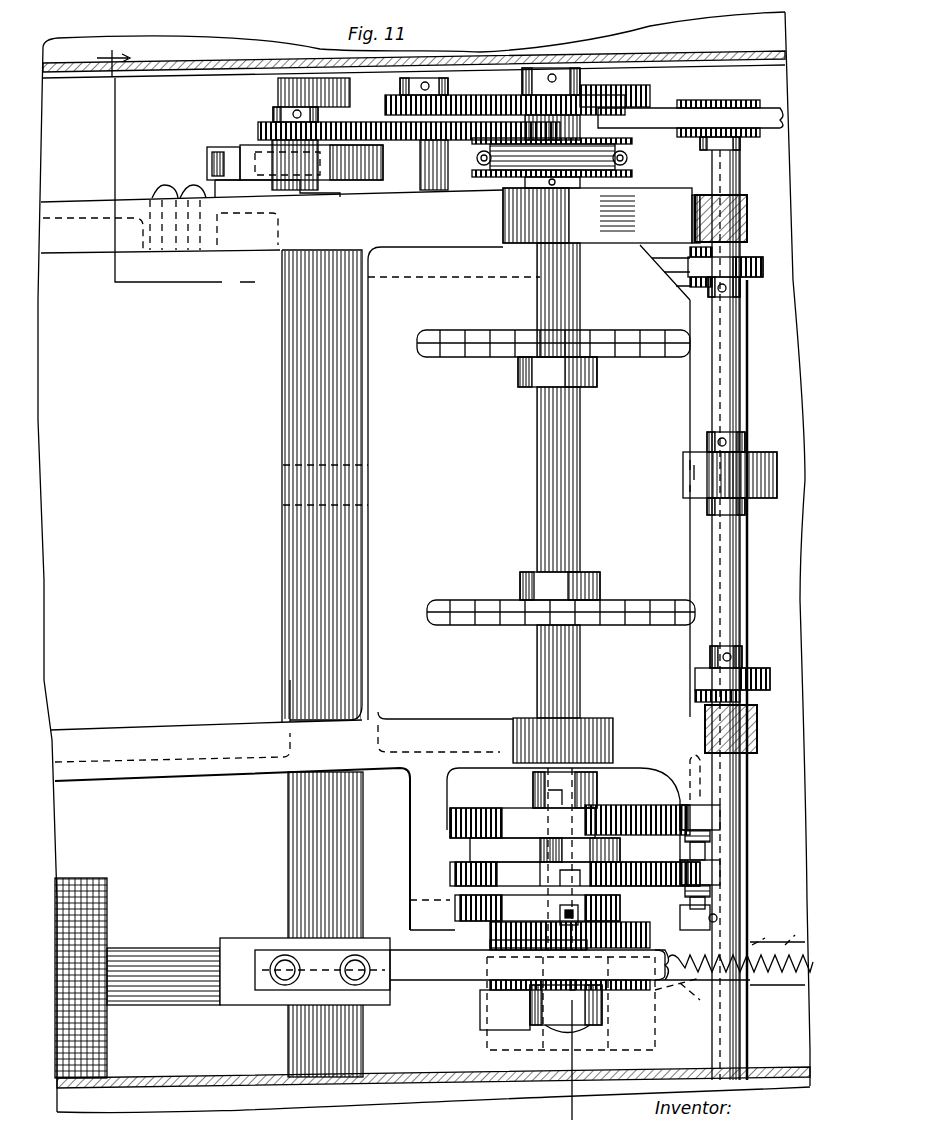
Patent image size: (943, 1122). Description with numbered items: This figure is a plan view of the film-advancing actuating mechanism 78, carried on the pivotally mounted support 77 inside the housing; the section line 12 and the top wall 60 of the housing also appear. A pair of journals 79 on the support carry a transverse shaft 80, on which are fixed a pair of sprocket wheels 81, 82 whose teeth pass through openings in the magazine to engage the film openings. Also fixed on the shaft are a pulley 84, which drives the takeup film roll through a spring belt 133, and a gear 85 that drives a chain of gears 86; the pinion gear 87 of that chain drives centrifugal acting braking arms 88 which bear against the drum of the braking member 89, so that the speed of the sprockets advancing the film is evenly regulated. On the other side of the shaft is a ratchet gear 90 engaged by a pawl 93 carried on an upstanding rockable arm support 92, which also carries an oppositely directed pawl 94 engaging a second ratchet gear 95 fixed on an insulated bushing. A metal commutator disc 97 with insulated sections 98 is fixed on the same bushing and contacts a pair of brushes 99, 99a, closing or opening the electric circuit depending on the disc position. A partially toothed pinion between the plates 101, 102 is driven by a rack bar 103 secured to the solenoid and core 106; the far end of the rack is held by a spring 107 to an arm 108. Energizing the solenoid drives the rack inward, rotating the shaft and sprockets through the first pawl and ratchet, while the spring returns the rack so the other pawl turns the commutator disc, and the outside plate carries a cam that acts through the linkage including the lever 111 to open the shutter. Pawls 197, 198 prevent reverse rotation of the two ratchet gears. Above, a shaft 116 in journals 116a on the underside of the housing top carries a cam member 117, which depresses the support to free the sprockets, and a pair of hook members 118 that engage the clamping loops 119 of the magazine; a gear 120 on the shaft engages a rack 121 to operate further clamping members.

The section line 12- 12 is at (339, 578).
The top plate 60 is at (246, 63).
The support 77 is at (93, 253).
The actuating mechanism 78 is at (646, 770).
The journals 79 is at (523, 240).
The transverse shaft 80 is at (582, 495).
The sprocket wheel 81 is at (468, 357).
The sprocket wheel 82 is at (466, 602).
The pulley 84 is at (618, 182).
The gear 85 is at (645, 88).
The chain of gears 86 is at (494, 84).
The pinion gear 87 is at (262, 125).
The braking arms 88 is at (262, 198).
The braking member 89 is at (222, 148).
The ratchet gear 90 is at (472, 818).
The rockable arm support 92 is at (545, 848).
The pawl 93 is at (527, 818).
The pawl 94 is at (580, 878).
The ratchet gear 95 is at (455, 876).
The commutator disc 97 is at (537, 908).
The insulated sections 98 is at (565, 920).
The brush 99 is at (458, 920).
The brush 99a is at (686, 922).
The plate 101 is at (492, 943).
The outside plate 102 is at (480, 1000).
The rack bar 103 is at (527, 965).
The solenoid and core 106 is at (126, 944).
The spring 107 is at (790, 972).
The arm 108 is at (763, 940).
The lever 111 is at (712, 1023).
The shaft 116 is at (716, 398).
The journals 116a is at (745, 205).
The cam member 117 is at (775, 498).
The hook members 118 is at (764, 278).
The clamping loops 119 is at (690, 283).
The gear 120 is at (740, 100).
The rack 121 is at (668, 108).
The spring belt 133 is at (632, 153).
The pawl 197 is at (720, 870).
The pawl 198 is at (720, 812).